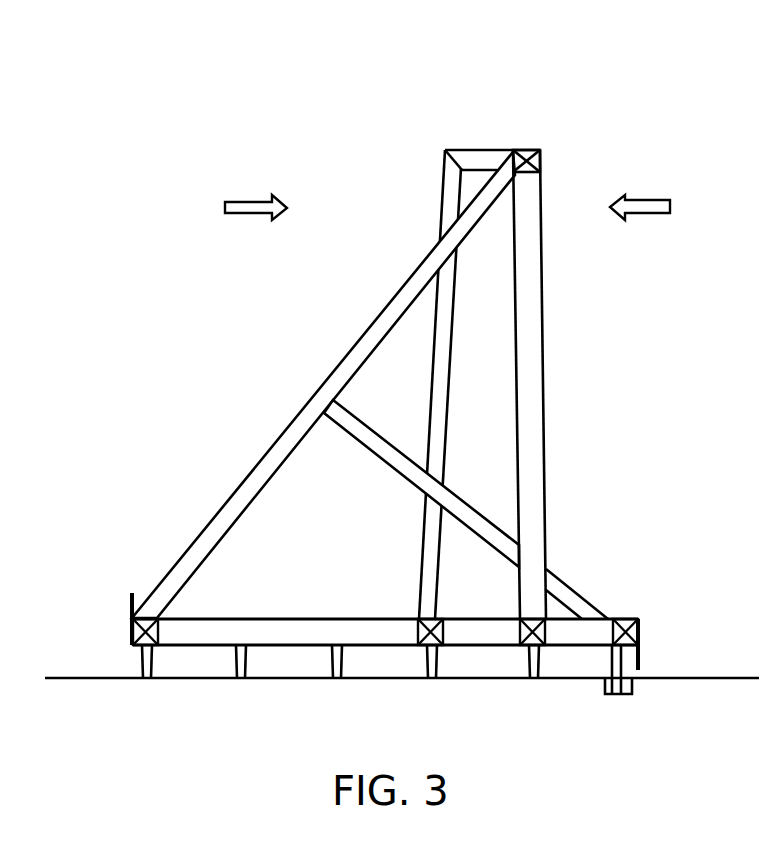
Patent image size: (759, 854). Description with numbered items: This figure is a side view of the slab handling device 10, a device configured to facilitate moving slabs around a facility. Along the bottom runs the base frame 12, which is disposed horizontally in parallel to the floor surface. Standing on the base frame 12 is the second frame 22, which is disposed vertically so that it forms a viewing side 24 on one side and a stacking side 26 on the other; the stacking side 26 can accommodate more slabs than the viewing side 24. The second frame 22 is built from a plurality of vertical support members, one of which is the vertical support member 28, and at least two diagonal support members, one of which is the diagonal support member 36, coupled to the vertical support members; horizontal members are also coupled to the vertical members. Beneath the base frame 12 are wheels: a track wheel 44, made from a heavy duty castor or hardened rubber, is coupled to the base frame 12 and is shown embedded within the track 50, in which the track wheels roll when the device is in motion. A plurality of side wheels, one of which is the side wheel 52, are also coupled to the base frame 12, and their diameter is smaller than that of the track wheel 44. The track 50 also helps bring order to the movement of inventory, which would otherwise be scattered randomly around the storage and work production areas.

The slab handling device 10 is at (490, 98).
The base frame 12 is at (258, 628).
The second frame 22 is at (537, 322).
The viewing side 24 is at (660, 208).
The stacking side 26 is at (239, 208).
The vertical support member 28 is at (441, 376).
The diagonal support member 36 is at (383, 462).
The track wheel 44 is at (597, 678).
The track 50 is at (623, 697).
The side wheel 52 is at (145, 679).